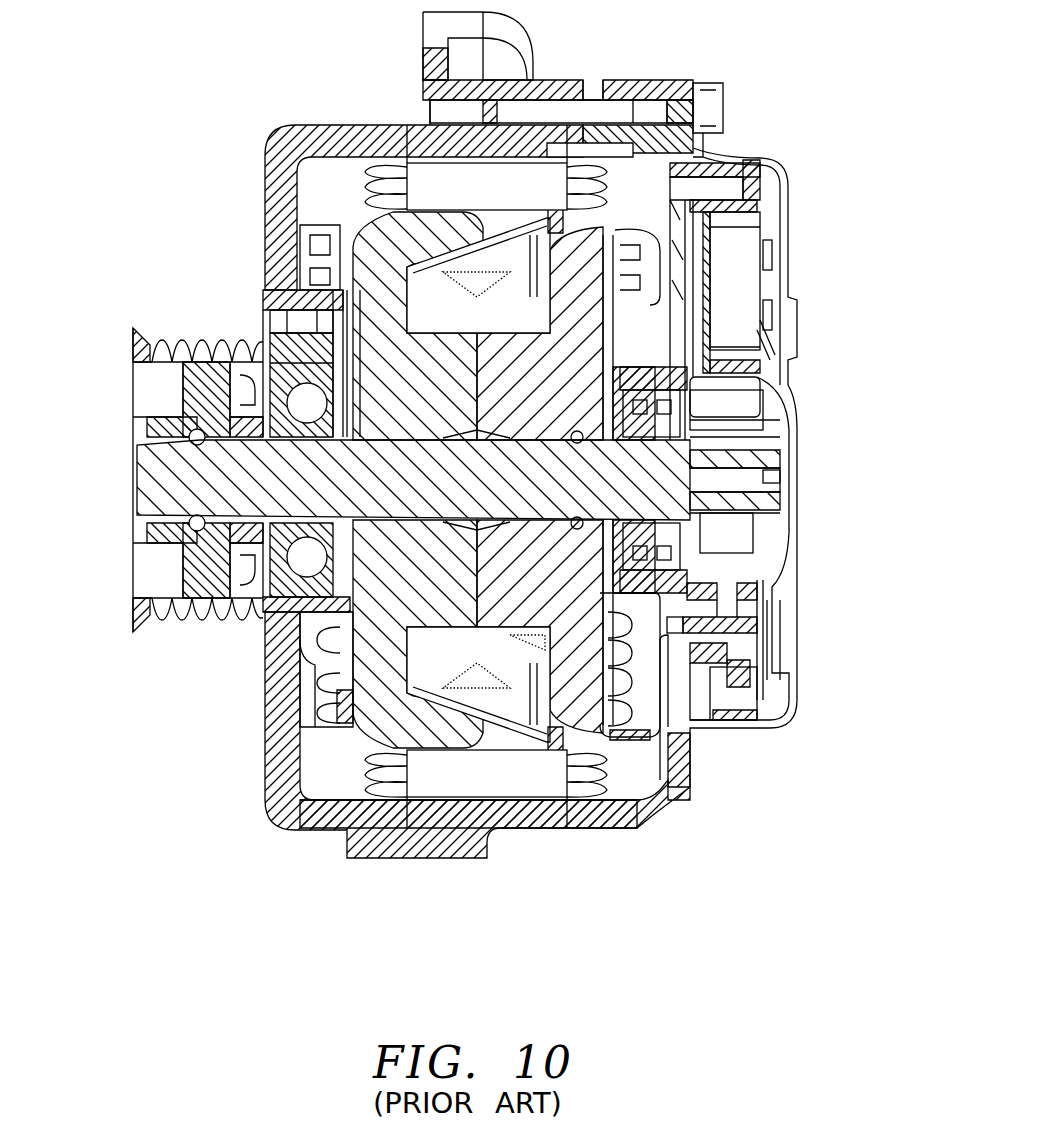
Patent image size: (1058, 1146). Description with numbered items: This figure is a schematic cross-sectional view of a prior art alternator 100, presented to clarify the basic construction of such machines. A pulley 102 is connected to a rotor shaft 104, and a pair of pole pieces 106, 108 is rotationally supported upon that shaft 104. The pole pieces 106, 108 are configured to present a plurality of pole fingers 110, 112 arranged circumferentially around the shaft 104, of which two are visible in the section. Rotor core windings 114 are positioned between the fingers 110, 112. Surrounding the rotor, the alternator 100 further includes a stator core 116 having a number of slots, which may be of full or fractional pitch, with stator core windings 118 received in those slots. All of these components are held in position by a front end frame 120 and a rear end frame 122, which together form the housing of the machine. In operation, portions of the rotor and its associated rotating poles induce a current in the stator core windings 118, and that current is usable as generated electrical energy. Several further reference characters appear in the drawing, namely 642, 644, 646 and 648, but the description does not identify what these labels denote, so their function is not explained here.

The alternator 100 is at (210, 936).
The pulley 102 is at (138, 605).
The rotor shaft 104 is at (635, 472).
The pole piece 106 is at (400, 570).
The pole piece 108 is at (757, 633).
The pole finger 110 is at (420, 247).
The pole finger 112 is at (517, 727).
The rotor core windings 114 is at (660, 250).
The stator core 116 is at (467, 812).
The stator core windings 118 is at (598, 795).
The front end frame 120 is at (290, 162).
The rear end frame 122 is at (797, 355).
The housing wall 642 is at (285, 770).
The shaft nut 644 is at (165, 473).
The retainer 646 is at (385, 620).
The terminal stud 648 is at (430, 180).